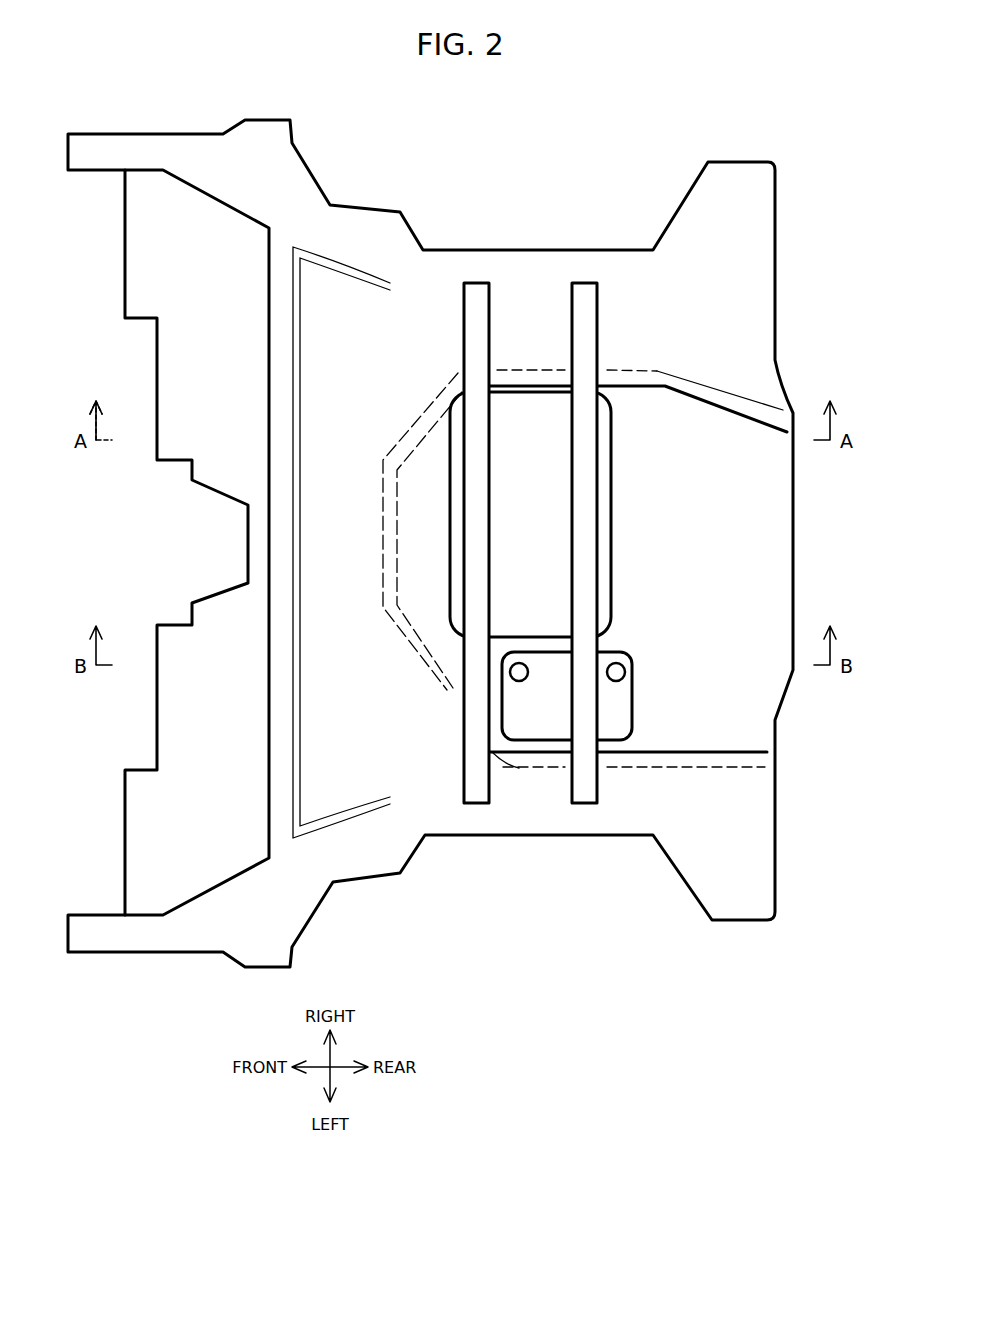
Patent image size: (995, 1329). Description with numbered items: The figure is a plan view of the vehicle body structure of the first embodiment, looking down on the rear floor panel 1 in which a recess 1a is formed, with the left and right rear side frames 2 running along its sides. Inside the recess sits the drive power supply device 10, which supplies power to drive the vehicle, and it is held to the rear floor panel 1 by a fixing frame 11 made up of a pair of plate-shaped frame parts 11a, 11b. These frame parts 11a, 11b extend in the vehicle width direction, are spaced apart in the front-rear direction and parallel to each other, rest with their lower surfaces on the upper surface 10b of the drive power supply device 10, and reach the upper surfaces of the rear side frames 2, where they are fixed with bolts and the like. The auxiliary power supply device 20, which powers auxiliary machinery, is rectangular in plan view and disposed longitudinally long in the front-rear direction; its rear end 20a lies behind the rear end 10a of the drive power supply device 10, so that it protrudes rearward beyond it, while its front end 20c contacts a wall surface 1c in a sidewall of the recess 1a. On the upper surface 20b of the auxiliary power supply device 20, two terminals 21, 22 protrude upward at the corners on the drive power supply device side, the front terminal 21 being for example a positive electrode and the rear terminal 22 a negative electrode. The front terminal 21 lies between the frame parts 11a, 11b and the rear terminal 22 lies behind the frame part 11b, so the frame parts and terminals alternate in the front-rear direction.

The rear floor panel 1 is at (725, 238).
The recess 1a is at (742, 752).
The wall surface 1c is at (520, 750).
The rear side frame 2 is at (543, 807).
The drive power supply device 10 is at (627, 478).
The rear end of drive power supply device 10a is at (613, 514).
The upper surface of drive power supply device 10b is at (537, 575).
The fixing frame 11 is at (531, 484).
The frame part 11a is at (478, 283).
The frame part 11b is at (585, 507).
The auxiliary power supply device 20 is at (647, 703).
The rear end of auxiliary power supply device 20a is at (634, 671).
The upper surface of auxiliary power supply device 20b is at (613, 718).
The front end of auxiliary power supply device 20c is at (502, 693).
The terminal 21 is at (519, 663).
The terminal 22 is at (618, 662).